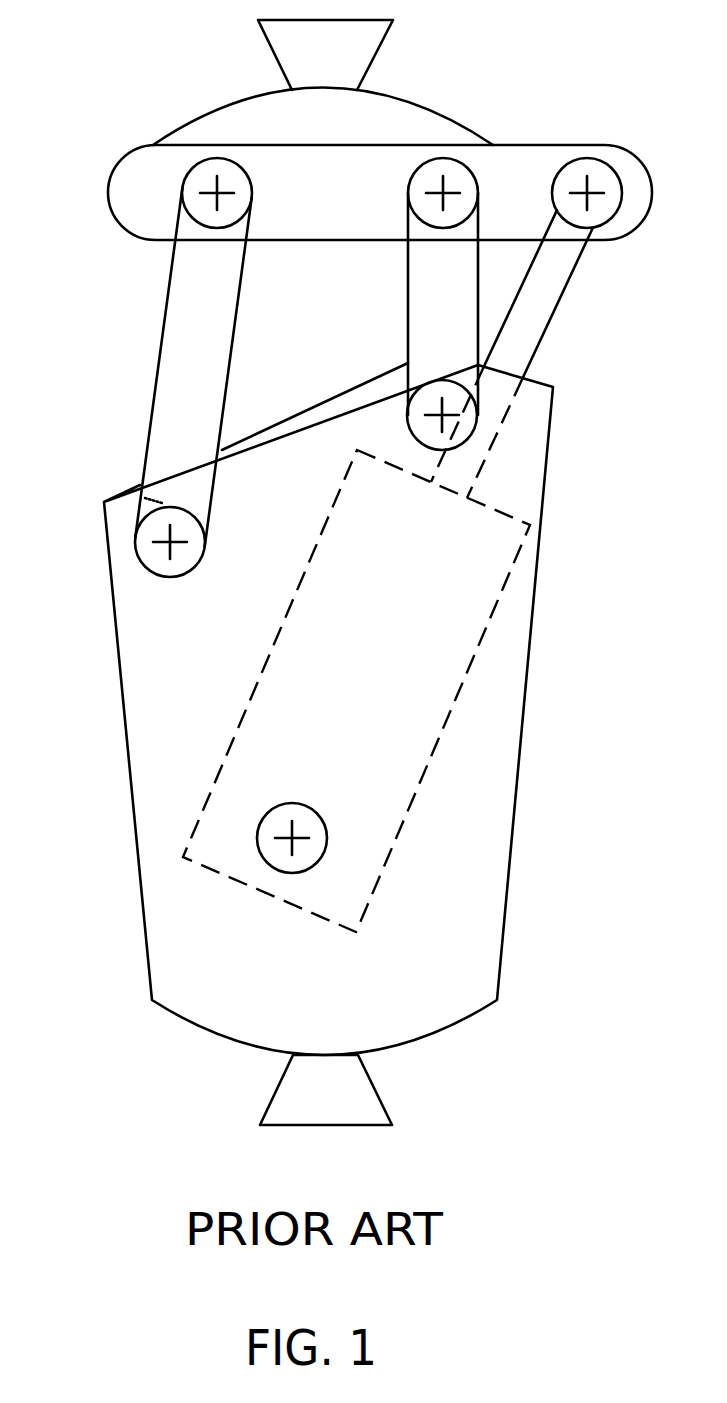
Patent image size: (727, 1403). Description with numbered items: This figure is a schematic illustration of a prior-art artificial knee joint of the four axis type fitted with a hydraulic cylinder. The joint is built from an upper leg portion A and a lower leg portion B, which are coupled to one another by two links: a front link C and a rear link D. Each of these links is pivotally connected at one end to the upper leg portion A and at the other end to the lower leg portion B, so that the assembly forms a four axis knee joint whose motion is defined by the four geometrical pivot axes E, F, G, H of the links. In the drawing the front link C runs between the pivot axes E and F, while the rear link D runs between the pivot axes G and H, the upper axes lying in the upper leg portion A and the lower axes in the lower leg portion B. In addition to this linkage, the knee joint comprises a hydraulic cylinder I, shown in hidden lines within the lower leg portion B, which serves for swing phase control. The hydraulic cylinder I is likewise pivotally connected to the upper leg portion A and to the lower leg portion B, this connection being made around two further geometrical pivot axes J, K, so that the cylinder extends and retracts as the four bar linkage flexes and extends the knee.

The upper leg portion A is at (386, 119).
The lower leg portion B is at (463, 915).
The front link C is at (183, 343).
The rear link D is at (435, 298).
The geometrical pivot axis E is at (215, 192).
The geometrical pivot axis F is at (167, 545).
The geometrical pivot axis G is at (450, 188).
The geometrical pivot axis H is at (468, 398).
The hydraulic cylinder I is at (427, 638).
The geometrical pivot axis J is at (593, 192).
The geometrical pivot axis K is at (283, 847).